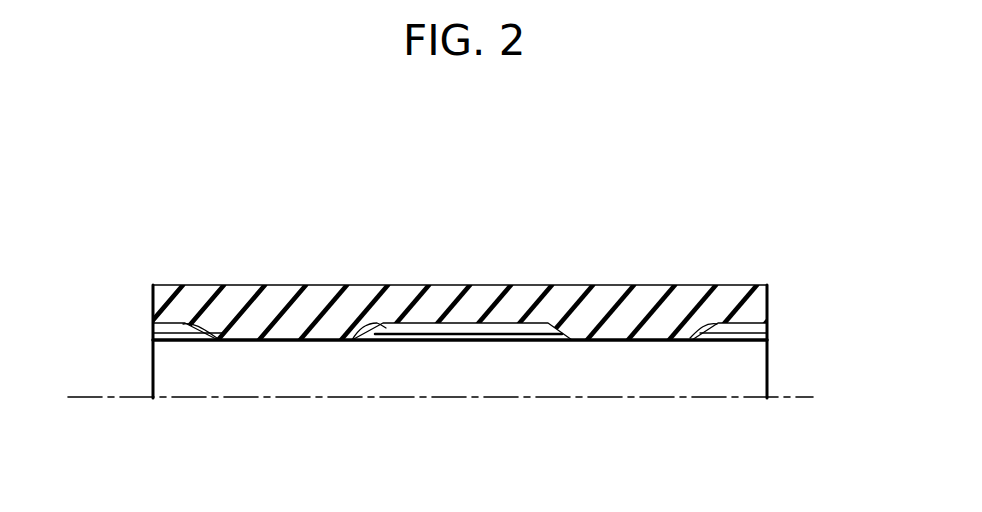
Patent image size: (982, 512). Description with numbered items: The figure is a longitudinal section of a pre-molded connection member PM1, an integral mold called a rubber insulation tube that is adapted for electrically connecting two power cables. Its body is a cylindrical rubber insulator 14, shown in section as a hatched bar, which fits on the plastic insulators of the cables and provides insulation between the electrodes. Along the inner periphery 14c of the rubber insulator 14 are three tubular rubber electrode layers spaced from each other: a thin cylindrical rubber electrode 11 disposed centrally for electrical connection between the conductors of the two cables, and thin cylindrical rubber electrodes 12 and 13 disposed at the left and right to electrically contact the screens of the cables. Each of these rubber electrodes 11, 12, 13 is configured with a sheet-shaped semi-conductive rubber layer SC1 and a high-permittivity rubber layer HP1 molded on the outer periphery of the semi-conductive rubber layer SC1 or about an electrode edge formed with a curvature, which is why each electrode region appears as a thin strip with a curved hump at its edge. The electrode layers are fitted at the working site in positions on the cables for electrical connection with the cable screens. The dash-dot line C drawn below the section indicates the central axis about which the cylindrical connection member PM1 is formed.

The pre-molded connection member PM1 is at (501, 193).
The rubber insulator 14 is at (300, 290).
The inner periphery 14c is at (610, 343).
The rubber electrode 12 is at (149, 324).
The rubber electrode 13 is at (772, 325).
The rubber electrode 11 is at (479, 344).
The high-permittivity rubber layer HP1 is at (190, 321).
The semi-conductive rubber layer SC1 is at (170, 338).
The center line C is at (791, 400).